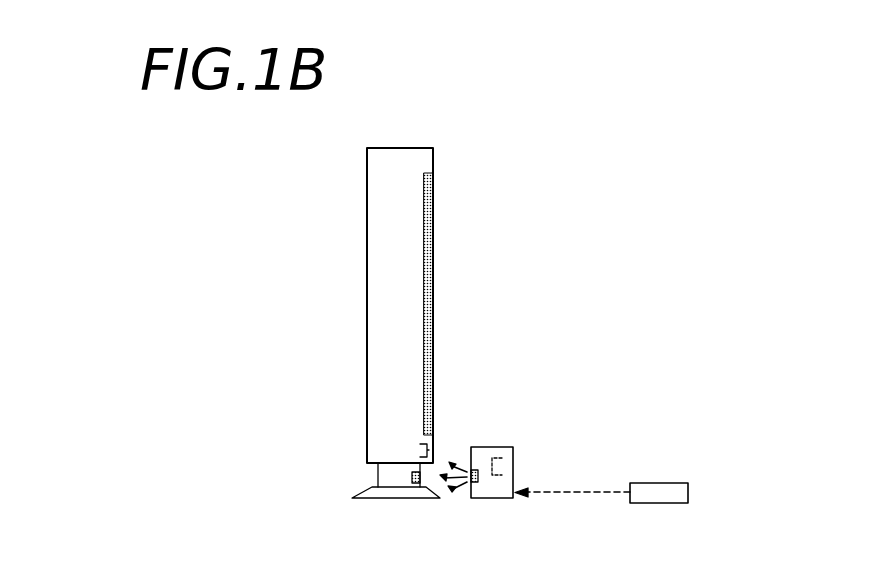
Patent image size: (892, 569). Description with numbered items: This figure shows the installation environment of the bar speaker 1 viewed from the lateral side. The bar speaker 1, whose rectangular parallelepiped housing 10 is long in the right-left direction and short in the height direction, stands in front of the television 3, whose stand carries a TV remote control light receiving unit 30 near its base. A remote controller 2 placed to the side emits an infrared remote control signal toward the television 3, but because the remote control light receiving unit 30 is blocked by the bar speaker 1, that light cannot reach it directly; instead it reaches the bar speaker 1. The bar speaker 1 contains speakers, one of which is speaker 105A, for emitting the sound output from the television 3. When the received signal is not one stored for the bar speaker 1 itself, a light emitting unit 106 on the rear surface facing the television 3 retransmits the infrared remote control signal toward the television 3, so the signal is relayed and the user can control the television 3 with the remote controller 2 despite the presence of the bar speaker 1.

The bar speaker 1 is at (498, 440).
The remote controller 2 is at (685, 483).
The television 3 is at (437, 143).
The housing 10 is at (511, 498).
The TV remote control light receiving unit 30 is at (412, 477).
The speaker 105A is at (504, 455).
The light emitting unit 106 is at (474, 483).